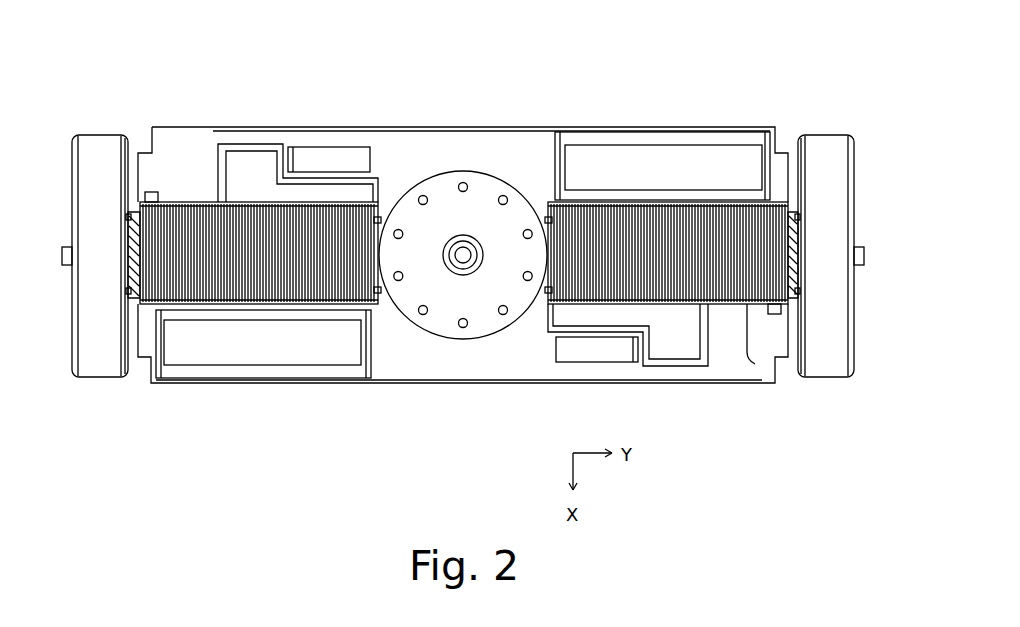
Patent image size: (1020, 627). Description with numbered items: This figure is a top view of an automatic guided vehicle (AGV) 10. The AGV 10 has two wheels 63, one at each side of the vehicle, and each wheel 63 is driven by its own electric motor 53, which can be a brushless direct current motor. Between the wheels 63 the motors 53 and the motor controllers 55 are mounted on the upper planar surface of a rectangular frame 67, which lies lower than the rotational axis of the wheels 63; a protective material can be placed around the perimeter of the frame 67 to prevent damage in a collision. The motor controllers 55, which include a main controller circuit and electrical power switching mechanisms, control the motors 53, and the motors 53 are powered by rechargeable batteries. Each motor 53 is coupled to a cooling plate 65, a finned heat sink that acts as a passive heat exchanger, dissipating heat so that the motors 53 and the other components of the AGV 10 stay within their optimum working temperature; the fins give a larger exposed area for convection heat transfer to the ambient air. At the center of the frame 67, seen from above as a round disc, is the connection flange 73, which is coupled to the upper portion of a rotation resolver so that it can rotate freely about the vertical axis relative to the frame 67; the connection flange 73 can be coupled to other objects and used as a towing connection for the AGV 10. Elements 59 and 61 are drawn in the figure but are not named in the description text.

The automatic guided vehicle (AGV) 10 is at (149, 68).
The electric motor 53 is at (227, 144).
The motor controller 55 is at (263, 168).
The controller housing 59 is at (619, 168).
The left wheel 61 is at (125, 272).
The wheel 63 is at (826, 216).
The cooling plate 65 is at (209, 199).
The rectangular frame 67 is at (527, 370).
The connection flange 73 is at (487, 190).